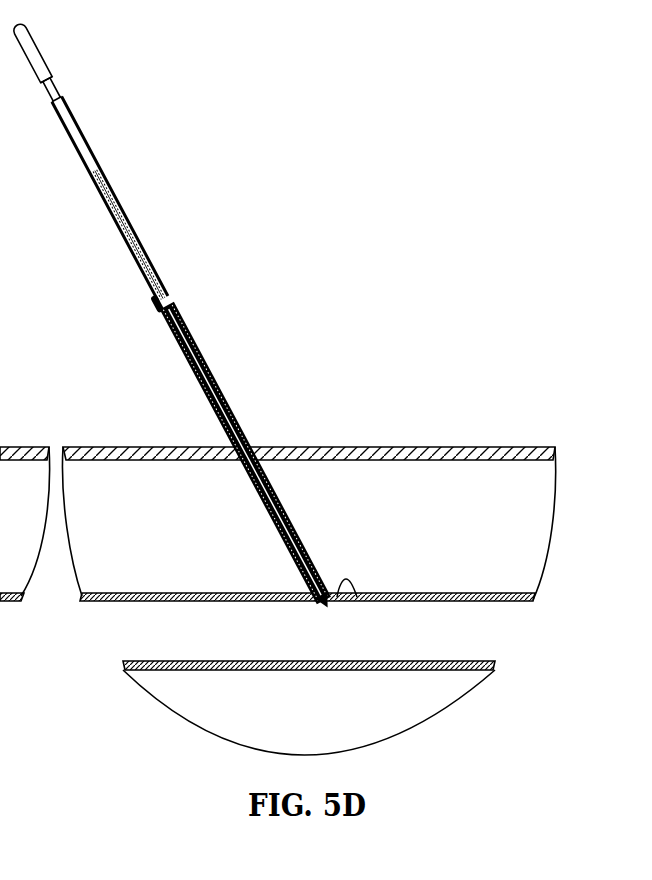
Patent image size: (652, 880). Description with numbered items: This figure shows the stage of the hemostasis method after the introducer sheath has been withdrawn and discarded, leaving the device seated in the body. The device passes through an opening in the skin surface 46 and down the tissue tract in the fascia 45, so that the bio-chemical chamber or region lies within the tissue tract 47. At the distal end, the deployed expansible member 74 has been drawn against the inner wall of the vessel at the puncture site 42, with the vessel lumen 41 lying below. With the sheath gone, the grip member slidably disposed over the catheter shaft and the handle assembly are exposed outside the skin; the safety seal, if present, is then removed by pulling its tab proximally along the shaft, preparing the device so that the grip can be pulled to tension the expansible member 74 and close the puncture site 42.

The skin surface 46 is at (450, 453).
The tissue tract 47 is at (340, 562).
The fascia 45 is at (0, 500).
The expansible member 74 is at (0, 625).
The vessel lumen 41 is at (152, 624).
The puncture site 42 is at (357, 597).